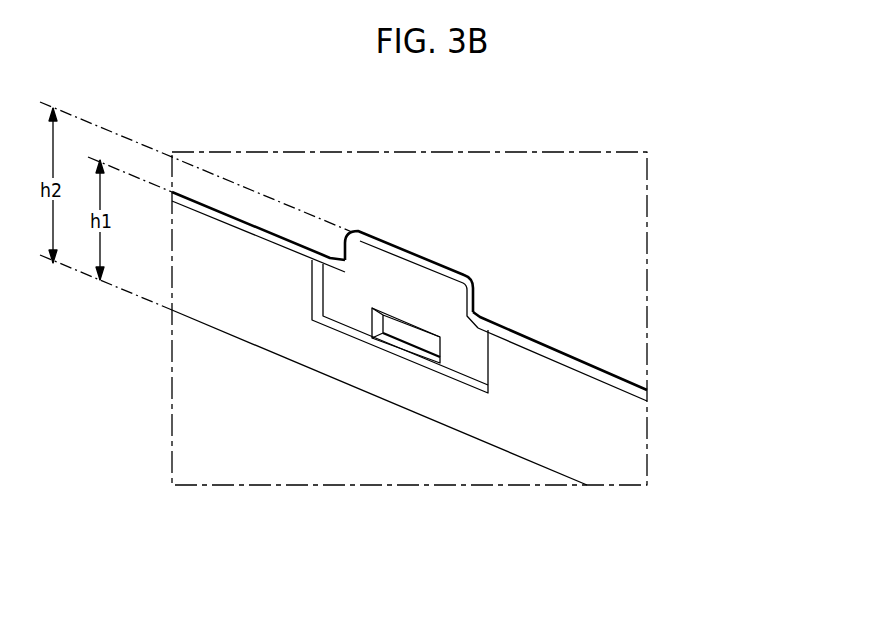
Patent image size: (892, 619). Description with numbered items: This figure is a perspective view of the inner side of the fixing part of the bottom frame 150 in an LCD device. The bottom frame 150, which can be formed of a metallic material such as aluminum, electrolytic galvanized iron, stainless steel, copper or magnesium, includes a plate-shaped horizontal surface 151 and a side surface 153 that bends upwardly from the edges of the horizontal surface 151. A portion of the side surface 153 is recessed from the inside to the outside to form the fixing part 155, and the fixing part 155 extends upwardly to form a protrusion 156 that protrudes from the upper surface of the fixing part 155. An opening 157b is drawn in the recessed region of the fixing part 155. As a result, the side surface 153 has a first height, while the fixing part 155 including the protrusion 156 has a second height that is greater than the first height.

The bottom frame 150 is at (707, 572).
The horizontal surface 151 is at (472, 467).
The side surface 153 is at (627, 450).
The fixing part 155 is at (493, 301).
The protrusion 156 is at (427, 268).
The opening 157b is at (392, 312).